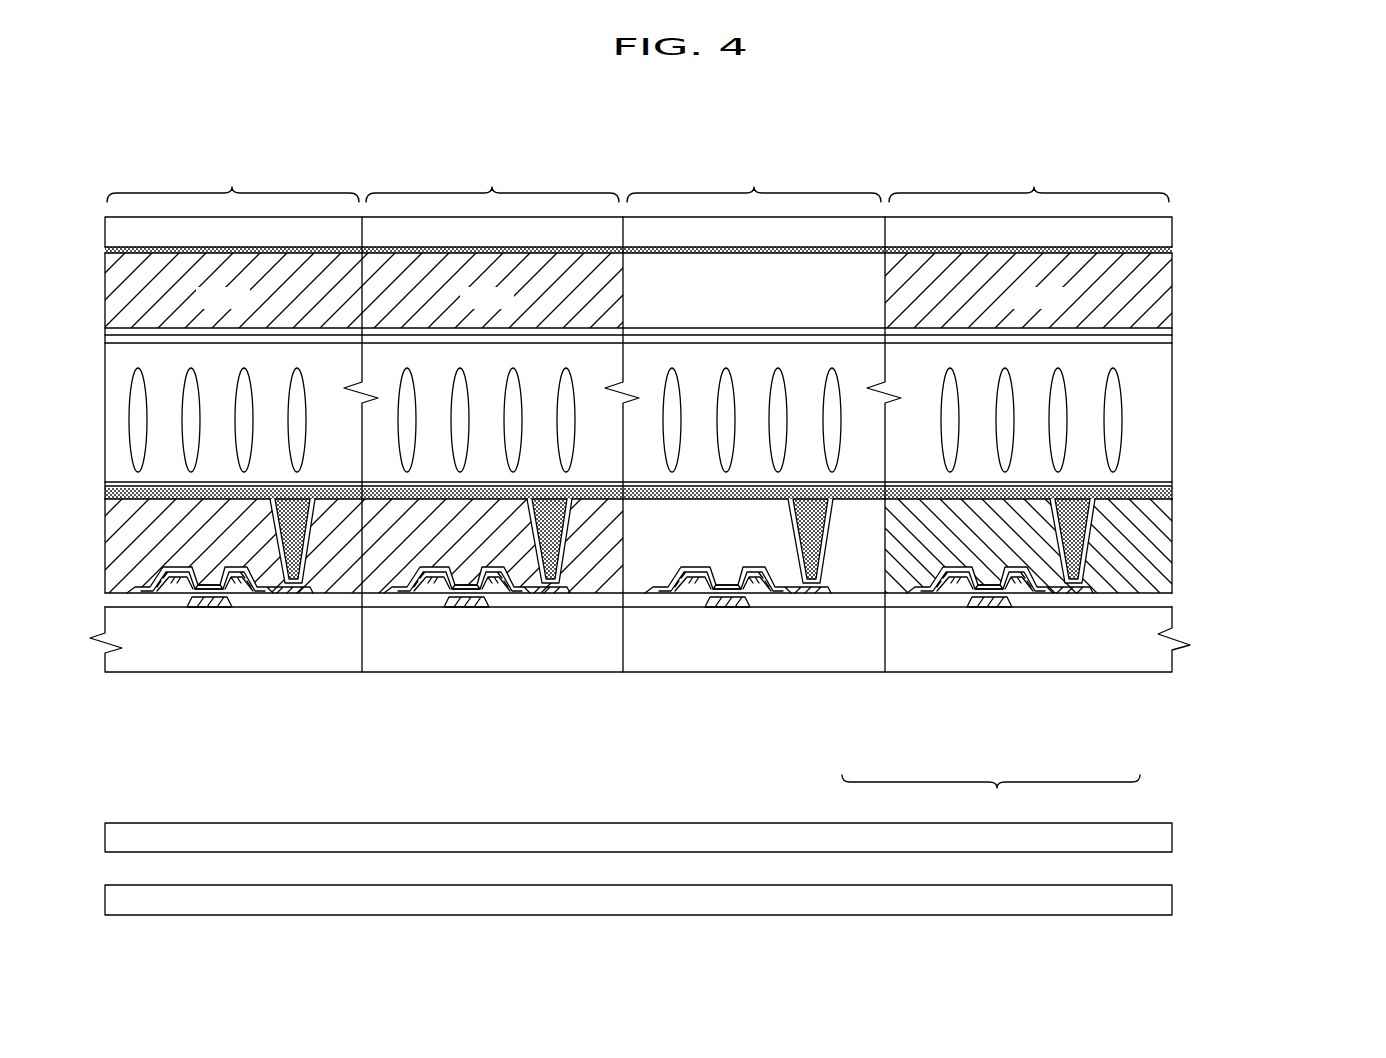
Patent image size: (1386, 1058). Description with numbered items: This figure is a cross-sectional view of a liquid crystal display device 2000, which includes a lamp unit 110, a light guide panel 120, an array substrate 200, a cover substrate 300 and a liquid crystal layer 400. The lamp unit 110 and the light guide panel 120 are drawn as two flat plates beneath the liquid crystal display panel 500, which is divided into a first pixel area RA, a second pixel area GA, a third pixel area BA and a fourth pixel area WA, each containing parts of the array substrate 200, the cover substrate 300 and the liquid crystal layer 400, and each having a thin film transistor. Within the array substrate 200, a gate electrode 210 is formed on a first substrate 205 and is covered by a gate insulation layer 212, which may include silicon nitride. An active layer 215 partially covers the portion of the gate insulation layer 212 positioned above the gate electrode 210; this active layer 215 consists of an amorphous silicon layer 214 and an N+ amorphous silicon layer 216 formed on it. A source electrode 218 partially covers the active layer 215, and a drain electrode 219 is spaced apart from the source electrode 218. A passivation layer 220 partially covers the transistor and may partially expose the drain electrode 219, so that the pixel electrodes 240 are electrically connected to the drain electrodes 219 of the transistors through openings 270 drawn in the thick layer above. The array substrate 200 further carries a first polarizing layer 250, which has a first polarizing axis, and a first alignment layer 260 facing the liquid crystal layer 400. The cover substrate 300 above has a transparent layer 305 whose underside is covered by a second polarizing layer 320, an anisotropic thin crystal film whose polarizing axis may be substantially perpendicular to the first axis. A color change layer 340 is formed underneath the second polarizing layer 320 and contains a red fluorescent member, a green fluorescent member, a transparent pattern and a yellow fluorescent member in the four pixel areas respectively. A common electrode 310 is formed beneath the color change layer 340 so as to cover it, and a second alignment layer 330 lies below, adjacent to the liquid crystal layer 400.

The liquid crystal display device 2000 is at (702, 137).
The liquid crystal display panel 500 is at (1327, 290).
The cover substrate 300 is at (1268, 230).
The transparent layer 305 is at (1172, 214).
The second polarizing layer 320 is at (1172, 248).
The color change layer 340 is at (1172, 277).
The common electrode 310 is at (1172, 331).
The second alignment layer 330 is at (1172, 339).
The liquid crystal layer 400 is at (1172, 385).
The array substrate 200 is at (1268, 452).
The first alignment layer 260 is at (1172, 481).
The first polarizing layer 250 is at (1172, 491).
The pixel electrodes 240 is at (1172, 500).
The contact hole 270 is at (1134, 557).
The passivation layer 220 is at (625, 597).
The source electrode 218 is at (923, 596).
The drain electrode 219 is at (1080, 600).
The N+ amorphous silicon layer 216 is at (935, 600).
The amorphous silicon layer 214 is at (960, 605).
The active layer 215 is at (893, 739).
The gate insulation layer 212 is at (1047, 600).
The gate electrode 210 is at (1000, 610).
The first substrate 205 is at (1172, 615).
The light guide panel 120 is at (1172, 832).
The lamp unit 110 is at (1172, 892).